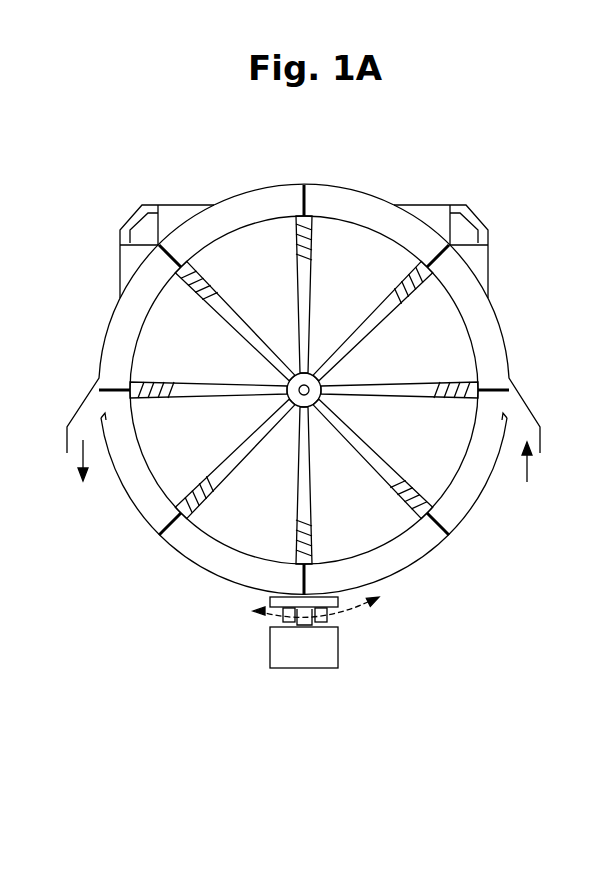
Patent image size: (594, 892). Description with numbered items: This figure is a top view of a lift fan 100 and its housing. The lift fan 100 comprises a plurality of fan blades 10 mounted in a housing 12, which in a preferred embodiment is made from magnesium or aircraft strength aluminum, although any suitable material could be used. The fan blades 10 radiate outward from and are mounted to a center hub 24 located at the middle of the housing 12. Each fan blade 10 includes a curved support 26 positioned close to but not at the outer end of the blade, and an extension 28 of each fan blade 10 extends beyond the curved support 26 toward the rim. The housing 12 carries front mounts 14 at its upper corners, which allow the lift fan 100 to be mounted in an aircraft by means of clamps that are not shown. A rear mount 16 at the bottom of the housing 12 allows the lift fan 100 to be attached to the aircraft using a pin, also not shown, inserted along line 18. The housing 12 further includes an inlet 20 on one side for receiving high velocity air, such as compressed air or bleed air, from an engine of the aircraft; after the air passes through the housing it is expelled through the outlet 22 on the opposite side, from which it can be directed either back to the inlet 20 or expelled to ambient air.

The lift fan 100 is at (178, 158).
The fan blades 10 is at (218, 308).
The housing 12 is at (360, 172).
The front mounts 14 is at (110, 212).
The rear mount 16 is at (262, 608).
The line 18 is at (382, 598).
The inlet 20 is at (527, 476).
The outlet 22 is at (83, 475).
The center hub 24 is at (306, 384).
The curved support 26 is at (463, 314).
The extension 28 is at (452, 248).